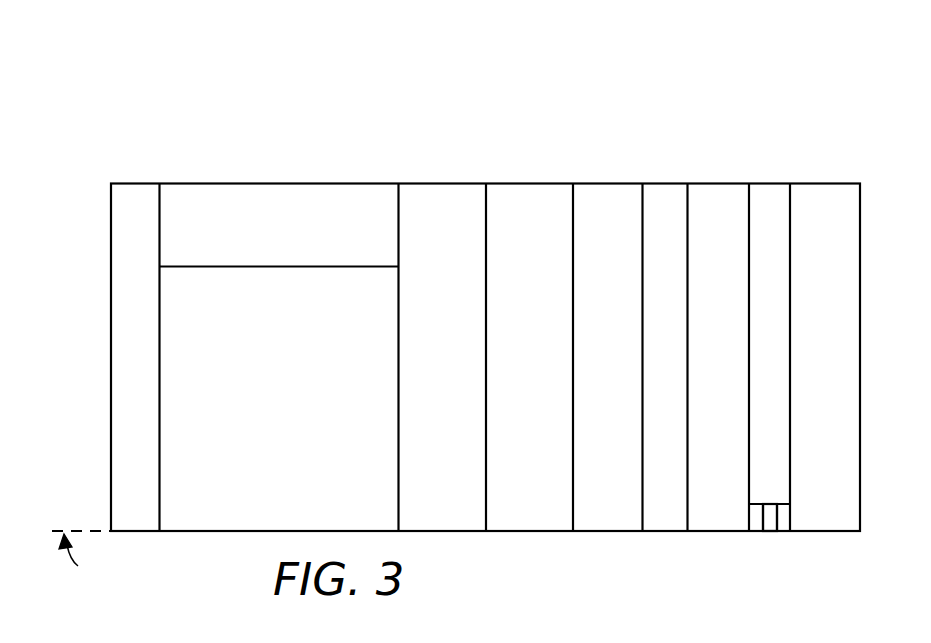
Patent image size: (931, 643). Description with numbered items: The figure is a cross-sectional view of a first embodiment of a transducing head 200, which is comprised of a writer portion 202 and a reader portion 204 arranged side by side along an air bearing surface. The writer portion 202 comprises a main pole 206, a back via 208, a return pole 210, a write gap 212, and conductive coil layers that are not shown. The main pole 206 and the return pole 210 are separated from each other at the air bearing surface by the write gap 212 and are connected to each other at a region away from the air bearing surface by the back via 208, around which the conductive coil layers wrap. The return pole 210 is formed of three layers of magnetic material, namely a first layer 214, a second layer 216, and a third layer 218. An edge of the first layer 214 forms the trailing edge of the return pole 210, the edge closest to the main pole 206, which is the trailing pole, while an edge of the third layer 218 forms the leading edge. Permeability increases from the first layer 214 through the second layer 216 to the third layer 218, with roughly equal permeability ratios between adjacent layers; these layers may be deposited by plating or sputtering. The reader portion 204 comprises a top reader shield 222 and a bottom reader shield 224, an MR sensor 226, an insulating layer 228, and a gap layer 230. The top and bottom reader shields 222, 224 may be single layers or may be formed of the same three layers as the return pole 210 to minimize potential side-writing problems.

The transducing head 200 is at (117, 76).
The writer portion 202 is at (341, 302).
The reader portion 204 is at (779, 352).
The main pole 206 is at (111, 447).
The back via 208 is at (323, 183).
The return pole 210 is at (521, 329).
The write gap 212 is at (304, 374).
The first layer 214 is at (459, 369).
The second layer 216 is at (549, 370).
The third layer 218 is at (626, 370).
The top reader shield 222 is at (720, 531).
The bottom reader shield 224 is at (833, 531).
The MR sensor 226 is at (767, 531).
The insulating layer 228 is at (752, 531).
The gap layer 230 is at (765, 184).